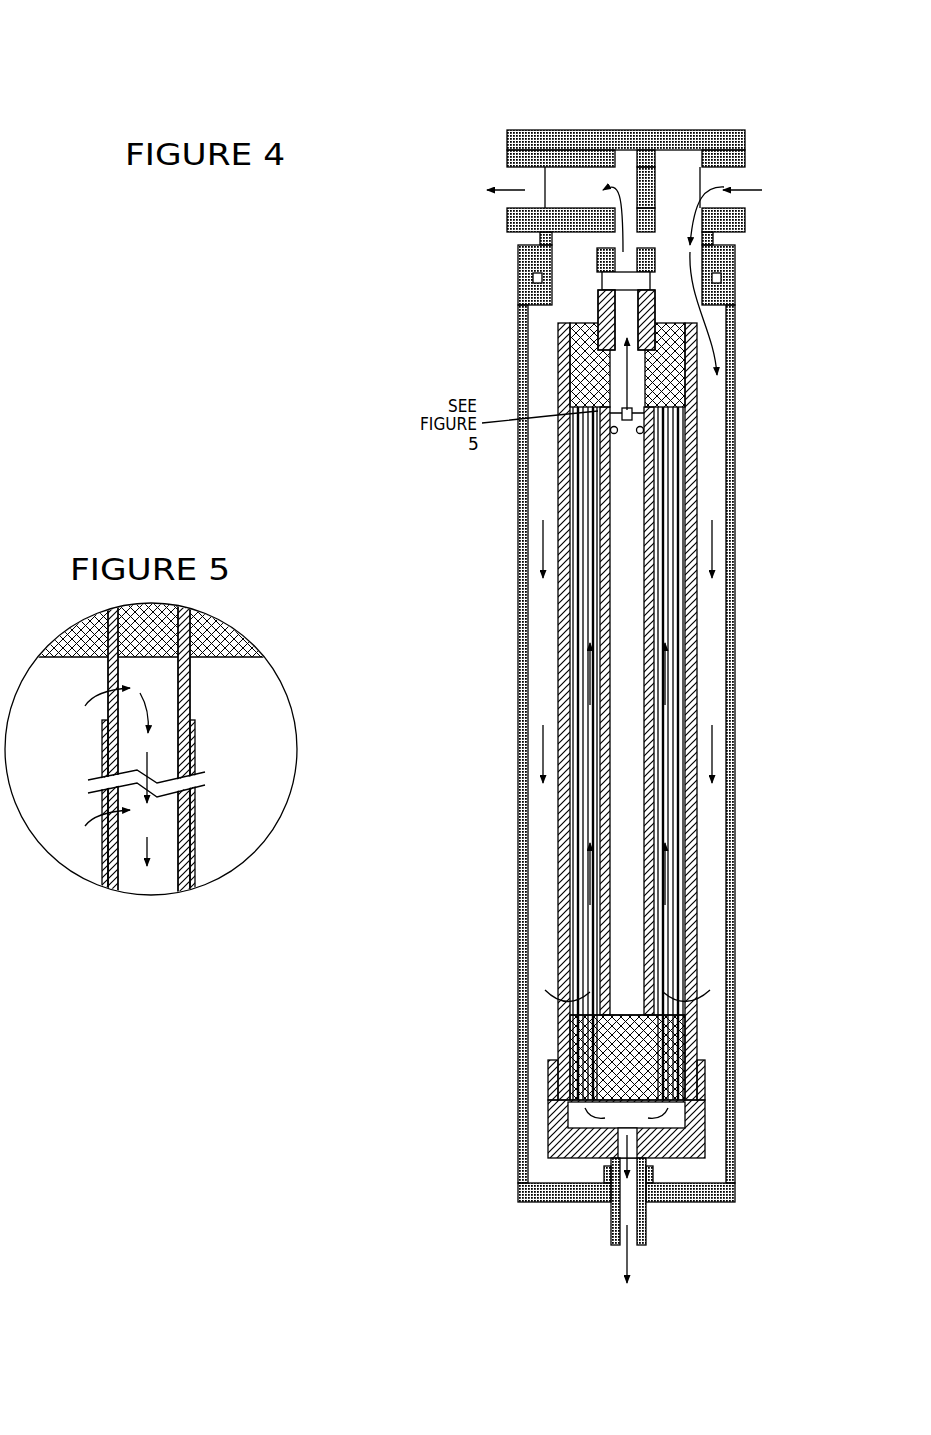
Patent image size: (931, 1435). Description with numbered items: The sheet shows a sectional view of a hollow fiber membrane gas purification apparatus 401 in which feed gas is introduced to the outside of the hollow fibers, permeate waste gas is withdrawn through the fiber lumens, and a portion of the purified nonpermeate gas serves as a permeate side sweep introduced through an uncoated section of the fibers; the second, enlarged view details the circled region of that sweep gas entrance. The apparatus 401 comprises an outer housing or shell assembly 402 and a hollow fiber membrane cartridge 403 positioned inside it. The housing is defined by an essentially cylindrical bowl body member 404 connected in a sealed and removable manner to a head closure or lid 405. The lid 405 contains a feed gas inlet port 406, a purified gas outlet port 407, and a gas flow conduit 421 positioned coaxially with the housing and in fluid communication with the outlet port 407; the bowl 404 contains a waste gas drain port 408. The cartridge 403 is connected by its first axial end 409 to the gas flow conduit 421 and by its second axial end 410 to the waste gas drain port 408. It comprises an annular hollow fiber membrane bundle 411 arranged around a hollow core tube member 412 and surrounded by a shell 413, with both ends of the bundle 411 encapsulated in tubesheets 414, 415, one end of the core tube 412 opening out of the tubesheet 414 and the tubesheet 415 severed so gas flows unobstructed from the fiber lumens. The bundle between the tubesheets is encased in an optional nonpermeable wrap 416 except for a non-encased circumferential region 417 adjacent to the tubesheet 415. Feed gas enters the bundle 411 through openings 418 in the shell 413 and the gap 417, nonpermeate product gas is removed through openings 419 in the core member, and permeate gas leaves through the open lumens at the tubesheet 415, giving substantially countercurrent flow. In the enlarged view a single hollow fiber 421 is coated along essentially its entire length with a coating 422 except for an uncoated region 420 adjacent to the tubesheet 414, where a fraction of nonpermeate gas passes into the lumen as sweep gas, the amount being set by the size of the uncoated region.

In FIG. 4, the gas purification apparatus 401 is at (655, 82).
In FIG. 4, the shell assembly 402 is at (775, 578).
In FIG. 4, the hollow fiber membrane cartridge 403 is at (710, 453).
In FIG. 4, the bowl body member 404 is at (735, 685).
In FIG. 4, the lid 405 is at (743, 129).
In FIG. 4, the feed gas inlet port 406 is at (735, 181).
In FIG. 4, the purified gas outlet port 407 is at (528, 182).
In FIG. 4, the waste gas drain port 408 is at (633, 1237).
In FIG. 4, the first axial end 409 is at (684, 322).
In FIG. 4, the second axial end 410 is at (565, 1160).
In FIG. 4, the hollow fiber membrane bundle 411 is at (585, 822).
In FIG. 4, the hollow core tube member 412 is at (600, 709).
In FIG. 4, the shell 413 is at (702, 810).
In FIG. 4, the tubesheet 414 is at (677, 370).
In FIG. 5, the tubesheet 414 is at (88, 652).
In FIG. 4, the tubesheet 415 is at (697, 1063).
In FIG. 4, the film barrier or wrap 416 is at (682, 497).
In FIG. 4, the non-encased circumferential region 417 is at (687, 988).
In FIG. 4, the openings 418 is at (699, 1008).
In FIG. 4, the openings 419 is at (612, 437).
In FIG. 5, the uncoated region 420 is at (197, 698).
In FIG. 4, the gas flow conduit 421 is at (625, 265).
In FIG. 5, the gas flow conduit 421 is at (186, 806).
In FIG. 5, the coating 422 is at (100, 756).